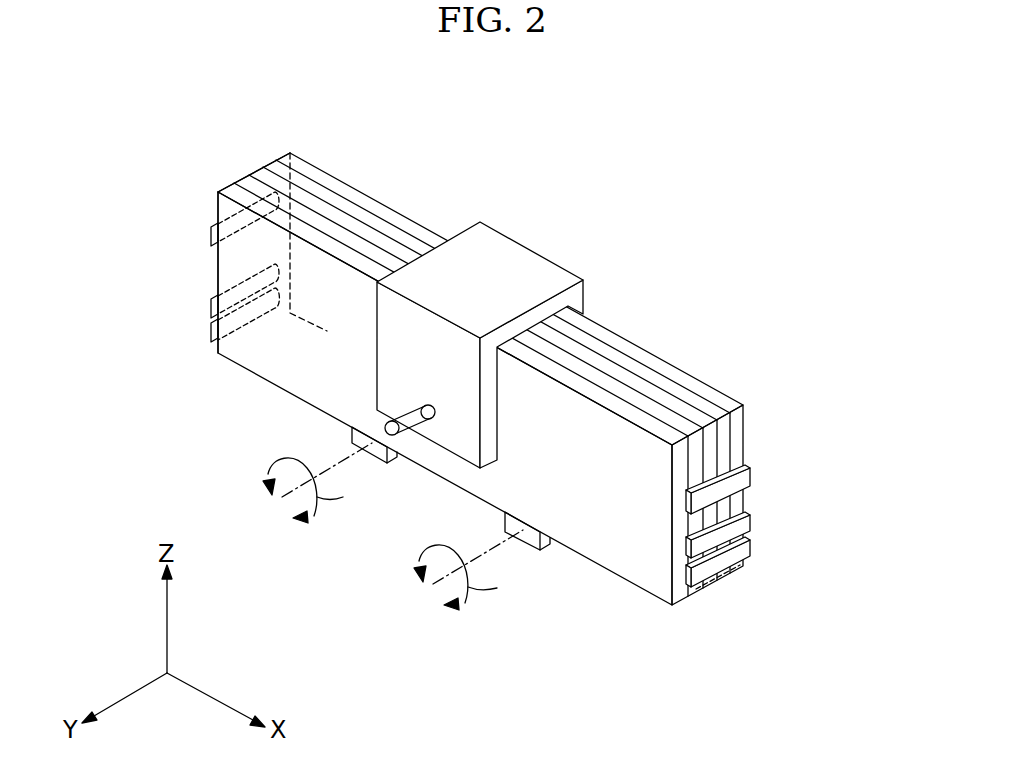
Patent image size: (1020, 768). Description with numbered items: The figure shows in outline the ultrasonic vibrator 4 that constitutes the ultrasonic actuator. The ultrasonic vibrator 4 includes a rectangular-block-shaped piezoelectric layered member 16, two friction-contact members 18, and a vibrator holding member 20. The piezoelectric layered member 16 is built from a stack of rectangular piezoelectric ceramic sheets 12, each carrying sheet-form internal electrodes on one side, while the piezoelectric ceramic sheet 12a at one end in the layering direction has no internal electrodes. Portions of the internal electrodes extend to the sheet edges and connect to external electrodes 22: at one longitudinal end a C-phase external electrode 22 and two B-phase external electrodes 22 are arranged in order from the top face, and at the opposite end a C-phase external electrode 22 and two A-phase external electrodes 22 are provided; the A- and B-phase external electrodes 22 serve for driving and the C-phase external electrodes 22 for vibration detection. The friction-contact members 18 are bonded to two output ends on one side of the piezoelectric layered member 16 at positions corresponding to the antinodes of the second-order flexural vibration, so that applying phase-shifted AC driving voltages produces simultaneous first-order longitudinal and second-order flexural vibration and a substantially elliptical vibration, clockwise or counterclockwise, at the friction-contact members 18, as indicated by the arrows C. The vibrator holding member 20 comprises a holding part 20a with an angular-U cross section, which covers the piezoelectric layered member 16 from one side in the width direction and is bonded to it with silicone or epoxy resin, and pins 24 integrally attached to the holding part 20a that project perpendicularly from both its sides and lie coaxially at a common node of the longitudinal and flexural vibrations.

The ultrasonic vibrator 4 is at (686, 140).
The piezoelectric ceramic sheet 12 is at (686, 370).
The piezoelectric ceramic sheet 12a is at (263, 367).
The piezoelectric layered member 16 is at (366, 141).
The friction-contact member 18 is at (357, 438).
The vibrator holding member 20 is at (540, 200).
The holding part 20a is at (543, 273).
The external electrode 22 is at (762, 443).
The pin 24 is at (421, 418).